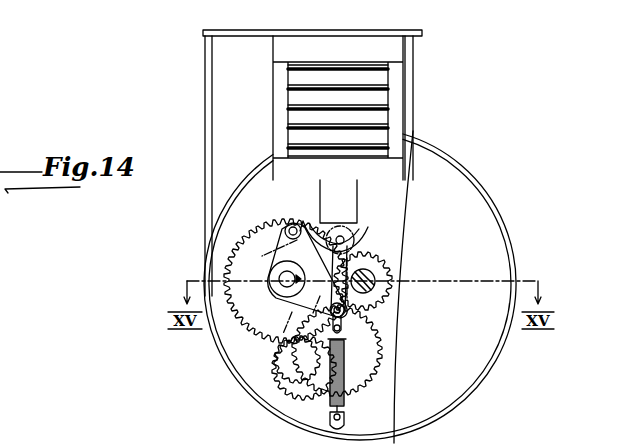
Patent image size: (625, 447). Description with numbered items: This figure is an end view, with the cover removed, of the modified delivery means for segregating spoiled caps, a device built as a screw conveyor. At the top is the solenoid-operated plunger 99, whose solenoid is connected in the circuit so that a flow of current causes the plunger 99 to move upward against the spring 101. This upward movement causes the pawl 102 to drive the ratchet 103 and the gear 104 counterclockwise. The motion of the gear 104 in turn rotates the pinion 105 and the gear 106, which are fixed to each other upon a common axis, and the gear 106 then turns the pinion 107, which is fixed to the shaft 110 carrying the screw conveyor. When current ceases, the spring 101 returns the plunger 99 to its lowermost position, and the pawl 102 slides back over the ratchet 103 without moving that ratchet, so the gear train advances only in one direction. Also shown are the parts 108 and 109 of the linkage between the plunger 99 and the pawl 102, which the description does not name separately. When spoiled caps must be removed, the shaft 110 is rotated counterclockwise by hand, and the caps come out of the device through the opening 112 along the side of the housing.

The plunger 99 is at (353, 210).
The spring 101 is at (343, 383).
The pawl 102 is at (266, 228).
The ratchet 103 is at (271, 294).
The gear 104 is at (268, 327).
The pinion 105 is at (311, 349).
The gear 106 is at (306, 384).
The pinion 107 is at (386, 284).
The pawl 108 is at (362, 243).
The pivot 109 is at (328, 302).
The shaft 110 is at (375, 274).
The opening 112 is at (397, 389).